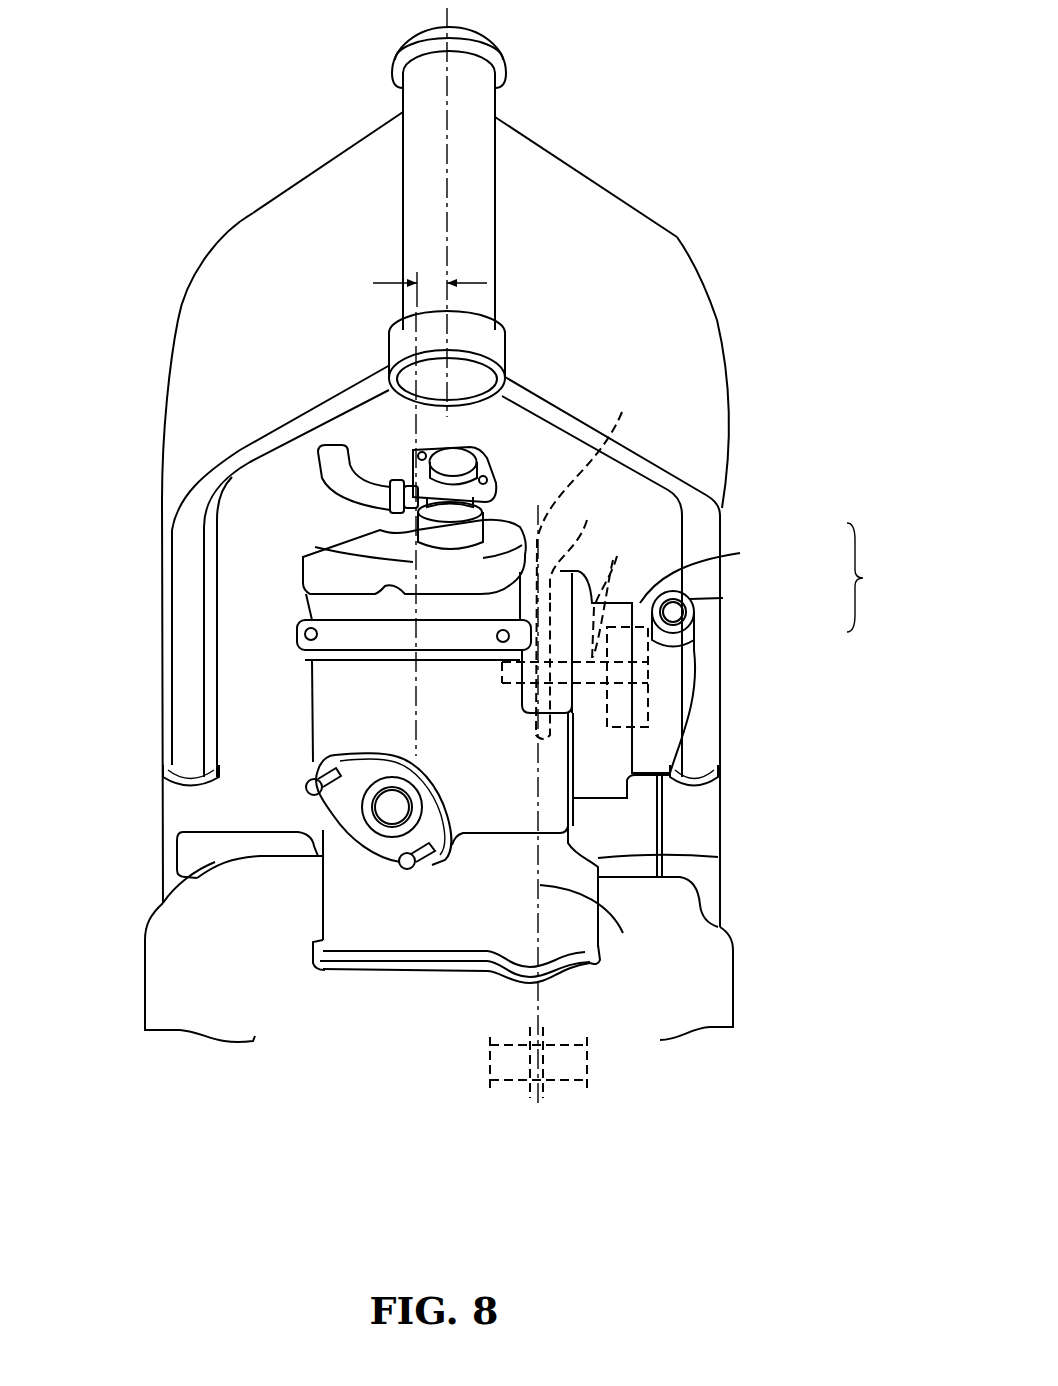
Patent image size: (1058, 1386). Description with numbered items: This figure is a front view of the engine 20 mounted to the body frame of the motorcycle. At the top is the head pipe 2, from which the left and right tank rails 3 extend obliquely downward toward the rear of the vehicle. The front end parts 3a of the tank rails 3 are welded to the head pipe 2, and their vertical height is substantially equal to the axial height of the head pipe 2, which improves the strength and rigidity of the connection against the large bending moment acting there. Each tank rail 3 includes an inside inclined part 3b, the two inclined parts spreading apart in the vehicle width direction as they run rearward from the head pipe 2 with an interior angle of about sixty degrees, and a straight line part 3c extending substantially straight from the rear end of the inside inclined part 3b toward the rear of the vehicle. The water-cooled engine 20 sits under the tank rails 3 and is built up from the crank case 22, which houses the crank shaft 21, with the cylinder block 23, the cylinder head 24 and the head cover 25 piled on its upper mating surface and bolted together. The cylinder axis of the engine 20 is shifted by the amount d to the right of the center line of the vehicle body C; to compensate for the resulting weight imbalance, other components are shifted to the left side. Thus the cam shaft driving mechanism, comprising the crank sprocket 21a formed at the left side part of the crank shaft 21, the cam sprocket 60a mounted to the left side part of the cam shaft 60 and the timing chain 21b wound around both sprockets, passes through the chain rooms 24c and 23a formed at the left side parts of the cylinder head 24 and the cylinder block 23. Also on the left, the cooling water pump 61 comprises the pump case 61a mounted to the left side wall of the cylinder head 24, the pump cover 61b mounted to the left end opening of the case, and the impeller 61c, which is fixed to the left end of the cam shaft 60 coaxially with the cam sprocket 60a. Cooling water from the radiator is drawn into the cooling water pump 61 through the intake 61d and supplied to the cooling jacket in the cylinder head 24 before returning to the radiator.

The head pipe 2 is at (403, 205).
The tank rails 3 is at (690, 241).
The front end parts 3a is at (382, 127).
The inside inclined parts 3b is at (270, 237).
The straight line parts 3c is at (162, 548).
The engine 20 is at (262, 723).
The crank shaft 21 is at (562, 1007).
The crank sprocket 21a is at (532, 1098).
The timing chain 21b is at (623, 933).
The crank case 22 is at (172, 968).
The cylinder block 23 is at (317, 893).
The chain room 23a is at (718, 857).
The cylinder head 24 is at (310, 743).
The chain room 24c is at (598, 560).
The head cover 25 is at (297, 577).
The cam shaft 60 is at (586, 660).
The cam sprocket 60a is at (610, 572).
The cooling water pump 61 is at (878, 577).
The pump case 61a is at (740, 553).
The pump cover 61b is at (697, 652).
The impeller 61c is at (648, 702).
The intake 61d is at (723, 599).
The center line of the vehicle body C is at (450, 243).
The shift amount d is at (430, 280).